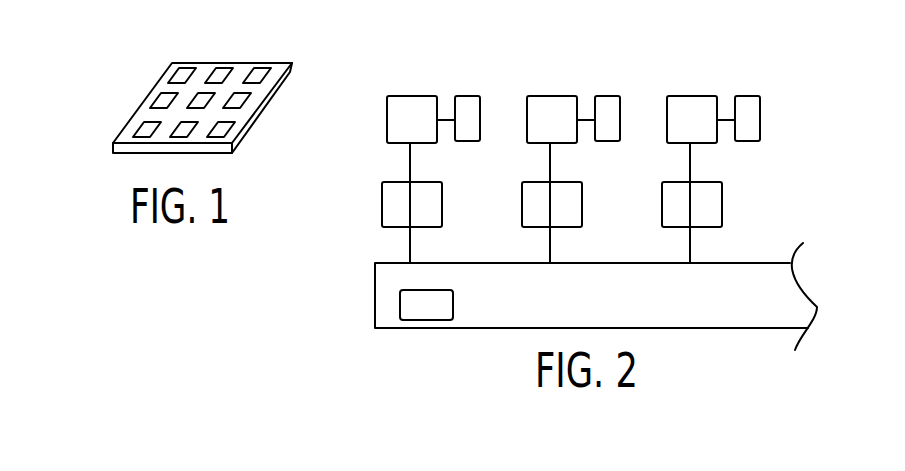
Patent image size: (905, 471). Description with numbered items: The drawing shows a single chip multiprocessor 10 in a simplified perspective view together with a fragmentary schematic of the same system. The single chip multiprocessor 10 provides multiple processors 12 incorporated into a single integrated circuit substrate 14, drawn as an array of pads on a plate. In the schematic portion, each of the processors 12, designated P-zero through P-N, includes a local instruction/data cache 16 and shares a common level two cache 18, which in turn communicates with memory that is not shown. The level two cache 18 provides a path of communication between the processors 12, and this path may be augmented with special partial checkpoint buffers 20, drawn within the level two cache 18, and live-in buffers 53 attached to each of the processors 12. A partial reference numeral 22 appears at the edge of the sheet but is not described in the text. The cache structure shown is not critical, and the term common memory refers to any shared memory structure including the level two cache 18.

In FIG. 1, the single chip multiprocessor 10 is at (298, 33).
In FIG. 1, the processors 12 is at (133, 130).
In FIG. 2, the processors 12 is at (410, 96).
In FIG. 1, the integrated circuit substrate 14 is at (120, 137).
In FIG. 2, the local instruction/data cache 16 is at (430, 227).
In FIG. 2, the L2 cache 18 is at (375, 297).
In FIG. 2, the partial checkpoint buffers 20 is at (453, 305).
In FIG. 1, the element 22 is at (156, 470).
In FIG. 2, the live-in buffers 53 is at (465, 141).